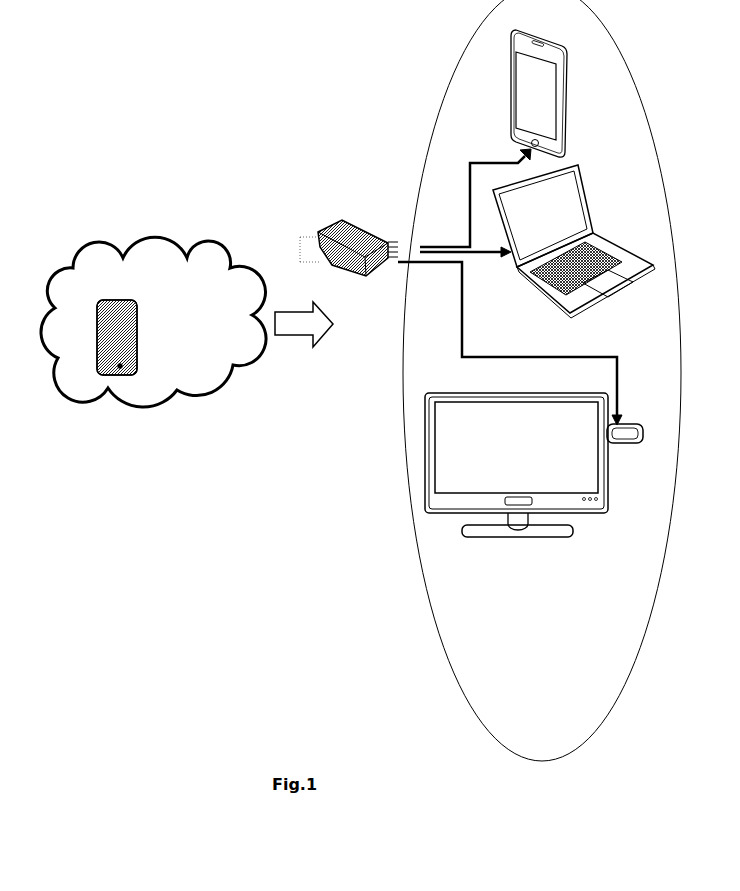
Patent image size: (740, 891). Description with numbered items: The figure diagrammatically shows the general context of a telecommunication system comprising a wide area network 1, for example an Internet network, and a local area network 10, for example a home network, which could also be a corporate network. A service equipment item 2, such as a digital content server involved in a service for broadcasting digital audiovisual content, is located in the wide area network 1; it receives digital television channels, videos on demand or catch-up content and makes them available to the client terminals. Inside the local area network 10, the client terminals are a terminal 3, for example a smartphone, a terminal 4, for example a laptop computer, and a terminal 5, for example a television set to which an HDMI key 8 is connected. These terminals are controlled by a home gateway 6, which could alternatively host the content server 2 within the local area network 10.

The wide area network 1 is at (153, 238).
The service equipment item 2 is at (137, 298).
The terminal 3 is at (553, 44).
The terminal 4 is at (571, 188).
The terminal 5 is at (538, 522).
The home gateway 6 is at (368, 227).
The HDMI key 8 is at (627, 448).
The local area network 10 is at (408, 440).